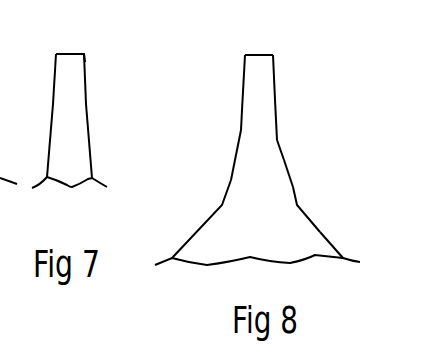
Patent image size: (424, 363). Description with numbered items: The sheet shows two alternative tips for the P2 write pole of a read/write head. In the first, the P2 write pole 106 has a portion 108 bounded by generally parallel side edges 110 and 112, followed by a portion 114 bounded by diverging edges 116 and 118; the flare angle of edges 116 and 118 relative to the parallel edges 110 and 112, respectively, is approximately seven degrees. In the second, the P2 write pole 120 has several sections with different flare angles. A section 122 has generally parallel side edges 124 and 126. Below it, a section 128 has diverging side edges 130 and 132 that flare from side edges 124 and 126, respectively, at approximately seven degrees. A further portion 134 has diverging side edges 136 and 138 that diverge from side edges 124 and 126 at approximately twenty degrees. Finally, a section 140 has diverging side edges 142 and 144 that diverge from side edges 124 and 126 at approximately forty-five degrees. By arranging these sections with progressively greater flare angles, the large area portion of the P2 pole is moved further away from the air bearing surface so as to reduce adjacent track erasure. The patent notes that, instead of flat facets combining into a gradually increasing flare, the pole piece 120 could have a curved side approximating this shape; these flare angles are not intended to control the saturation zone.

In FIG. 7, the P2 write pole 106 is at (98, 103).
In FIG. 7, the portion 108 is at (80, 66).
In FIG. 7, the side edge 110 is at (55, 76).
In FIG. 7, the side edge 112 is at (85, 91).
In FIG. 7, the portion 114 is at (68, 162).
In FIG. 7, the diverging edge 116 is at (52, 139).
In FIG. 7, the diverging edge 118 is at (88, 131).
In FIG. 8, the P2 write pole 120 is at (327, 89).
In FIG. 8, the section 122 is at (262, 68).
In FIG. 8, the side edge 124 is at (243, 87).
In FIG. 8, the side edge 126 is at (274, 80).
In FIG. 8, the section 128 is at (268, 113).
In FIG. 8, the side edge 130 is at (240, 127).
In FIG. 8, the side edge 132 is at (277, 132).
In FIG. 8, the portion 134 is at (269, 167).
In FIG. 8, the side edge 136 is at (231, 176).
In FIG. 8, the side edge 138 is at (291, 184).
In FIG. 8, the section 140 is at (298, 230).
In FIG. 8, the side edge 142 is at (205, 222).
In FIG. 8, the side edge 144 is at (325, 246).